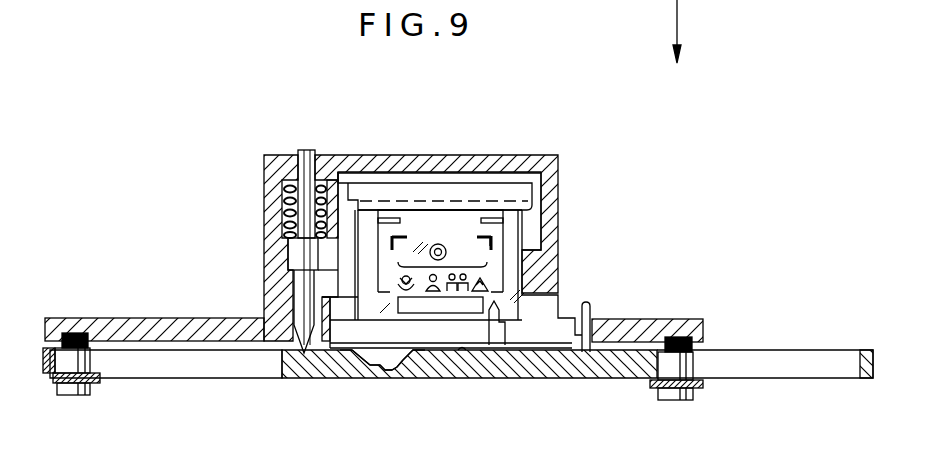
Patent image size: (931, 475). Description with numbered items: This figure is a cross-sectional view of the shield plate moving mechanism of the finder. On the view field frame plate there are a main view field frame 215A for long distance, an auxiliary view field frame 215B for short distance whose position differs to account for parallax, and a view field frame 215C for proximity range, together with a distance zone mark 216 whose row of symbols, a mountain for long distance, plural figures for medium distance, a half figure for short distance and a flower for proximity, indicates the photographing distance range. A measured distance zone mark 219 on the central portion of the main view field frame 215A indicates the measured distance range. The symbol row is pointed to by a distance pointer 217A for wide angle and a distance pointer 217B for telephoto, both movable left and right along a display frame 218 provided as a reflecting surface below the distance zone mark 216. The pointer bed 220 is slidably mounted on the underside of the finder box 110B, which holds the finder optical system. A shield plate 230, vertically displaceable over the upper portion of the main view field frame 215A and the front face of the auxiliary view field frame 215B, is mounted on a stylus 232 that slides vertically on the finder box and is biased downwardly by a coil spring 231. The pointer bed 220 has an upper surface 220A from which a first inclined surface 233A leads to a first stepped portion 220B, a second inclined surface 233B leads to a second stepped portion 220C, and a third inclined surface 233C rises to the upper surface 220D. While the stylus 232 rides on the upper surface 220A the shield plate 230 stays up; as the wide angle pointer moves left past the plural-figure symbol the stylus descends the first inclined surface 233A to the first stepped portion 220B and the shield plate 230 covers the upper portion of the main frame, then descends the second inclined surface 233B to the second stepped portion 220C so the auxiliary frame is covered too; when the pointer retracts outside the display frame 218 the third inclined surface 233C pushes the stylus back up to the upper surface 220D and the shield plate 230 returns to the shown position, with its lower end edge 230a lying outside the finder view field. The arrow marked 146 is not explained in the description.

The direction arrow 146 is at (633, 31).
The shield plate 230 is at (367, 189).
The lower end edge of the shield plate 230a is at (560, 195).
The coil spring 231 is at (290, 204).
The stylus 232 is at (298, 256).
The measured distance zone mark 219 is at (433, 245).
The main view field frame for long distance 215A is at (468, 210).
The auxiliary view field frame for short distance range 215B is at (492, 215).
The view field frame for proximity range 215C is at (490, 240).
The distance zone mark 216 is at (453, 264).
The display frame 218 is at (398, 304).
The finder box 110B is at (128, 322).
The distance pointer for wide angle 217A is at (492, 305).
The distance pointer for telephoto 217B is at (594, 300).
The pointer bed 220 is at (606, 368).
The upper surface of the pointer bed 220A is at (352, 351).
The first inclined surface 233A is at (322, 368).
The first stepped portion 220B is at (368, 367).
The second inclined surface 233B is at (383, 372).
The second stepped portion 220C is at (405, 365).
The third inclined surface 233C is at (423, 366).
The upper surface of the pointer bed 220D is at (467, 353).